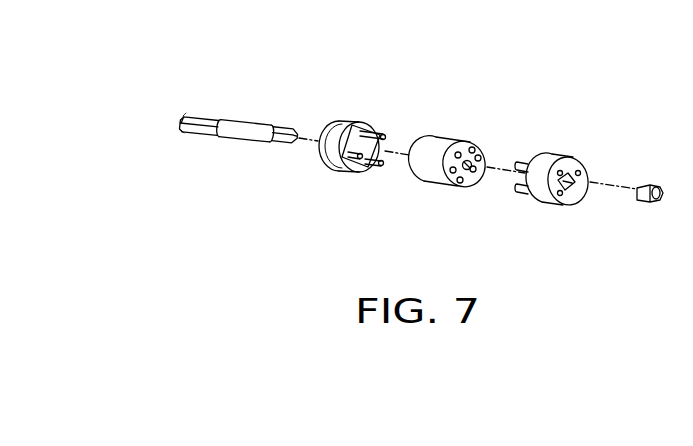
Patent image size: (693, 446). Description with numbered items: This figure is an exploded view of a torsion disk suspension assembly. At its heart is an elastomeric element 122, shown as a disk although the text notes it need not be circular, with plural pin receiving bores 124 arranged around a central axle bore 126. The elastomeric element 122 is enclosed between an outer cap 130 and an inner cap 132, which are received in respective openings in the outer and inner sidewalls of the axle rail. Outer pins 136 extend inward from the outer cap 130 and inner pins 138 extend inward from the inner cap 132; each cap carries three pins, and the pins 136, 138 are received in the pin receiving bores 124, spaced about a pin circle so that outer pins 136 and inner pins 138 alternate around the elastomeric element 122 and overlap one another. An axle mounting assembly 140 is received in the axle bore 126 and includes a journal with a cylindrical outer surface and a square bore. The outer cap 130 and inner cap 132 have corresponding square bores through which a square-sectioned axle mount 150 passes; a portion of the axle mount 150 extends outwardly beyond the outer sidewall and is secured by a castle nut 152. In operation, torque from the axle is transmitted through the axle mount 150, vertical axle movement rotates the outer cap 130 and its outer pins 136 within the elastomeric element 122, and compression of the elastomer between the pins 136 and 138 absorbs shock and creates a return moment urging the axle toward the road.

The elastomeric element 122 is at (450, 137).
The pin receiving bores 124 is at (476, 152).
The central axle bore 126 is at (471, 170).
The outer cap 130 is at (572, 156).
The inner cap 132 is at (360, 122).
The outer pins 136 is at (518, 162).
The inner pins 138 is at (385, 136).
The axle mounting assembly 140 is at (238, 146).
The axle mount 150 is at (198, 118).
The castle nut 152 is at (645, 201).